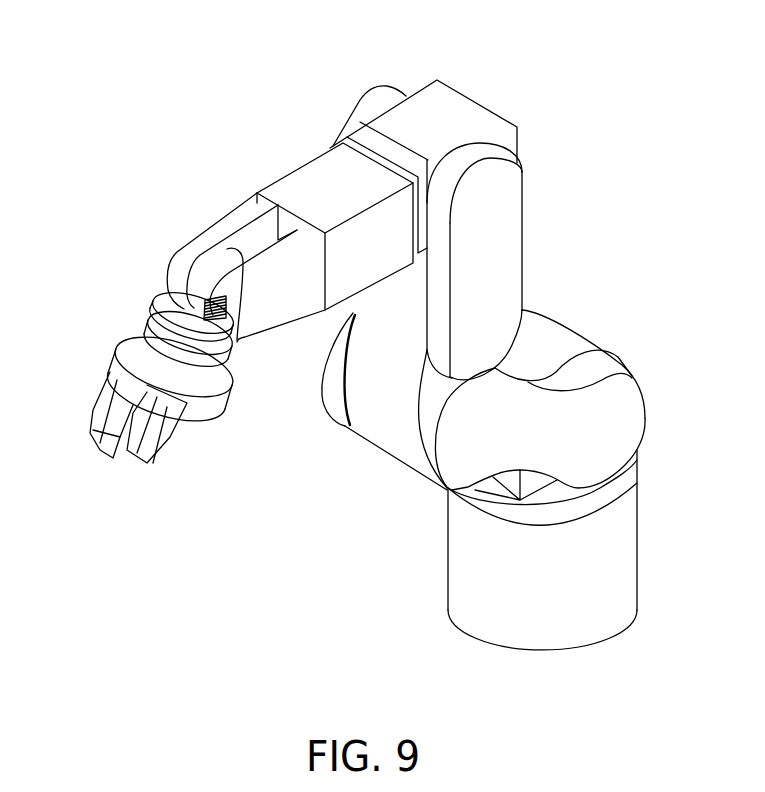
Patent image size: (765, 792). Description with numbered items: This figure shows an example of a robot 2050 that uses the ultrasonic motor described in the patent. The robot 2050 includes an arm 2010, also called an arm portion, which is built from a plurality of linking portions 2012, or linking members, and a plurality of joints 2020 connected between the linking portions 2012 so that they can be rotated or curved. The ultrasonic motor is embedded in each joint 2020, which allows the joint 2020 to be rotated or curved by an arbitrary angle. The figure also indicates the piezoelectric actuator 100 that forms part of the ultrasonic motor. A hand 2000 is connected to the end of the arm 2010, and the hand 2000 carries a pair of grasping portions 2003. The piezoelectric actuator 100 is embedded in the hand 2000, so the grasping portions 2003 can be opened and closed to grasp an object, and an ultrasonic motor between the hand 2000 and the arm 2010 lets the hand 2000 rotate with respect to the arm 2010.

The robot 2050 is at (120, 76).
The arm 2010 is at (155, 178).
The linking portion 2012 is at (300, 165).
The joint 2020 is at (166, 270).
The piezoelectric actuator 100 is at (213, 301).
The hand 2000 is at (220, 410).
The grasping portion 2003 is at (133, 492).